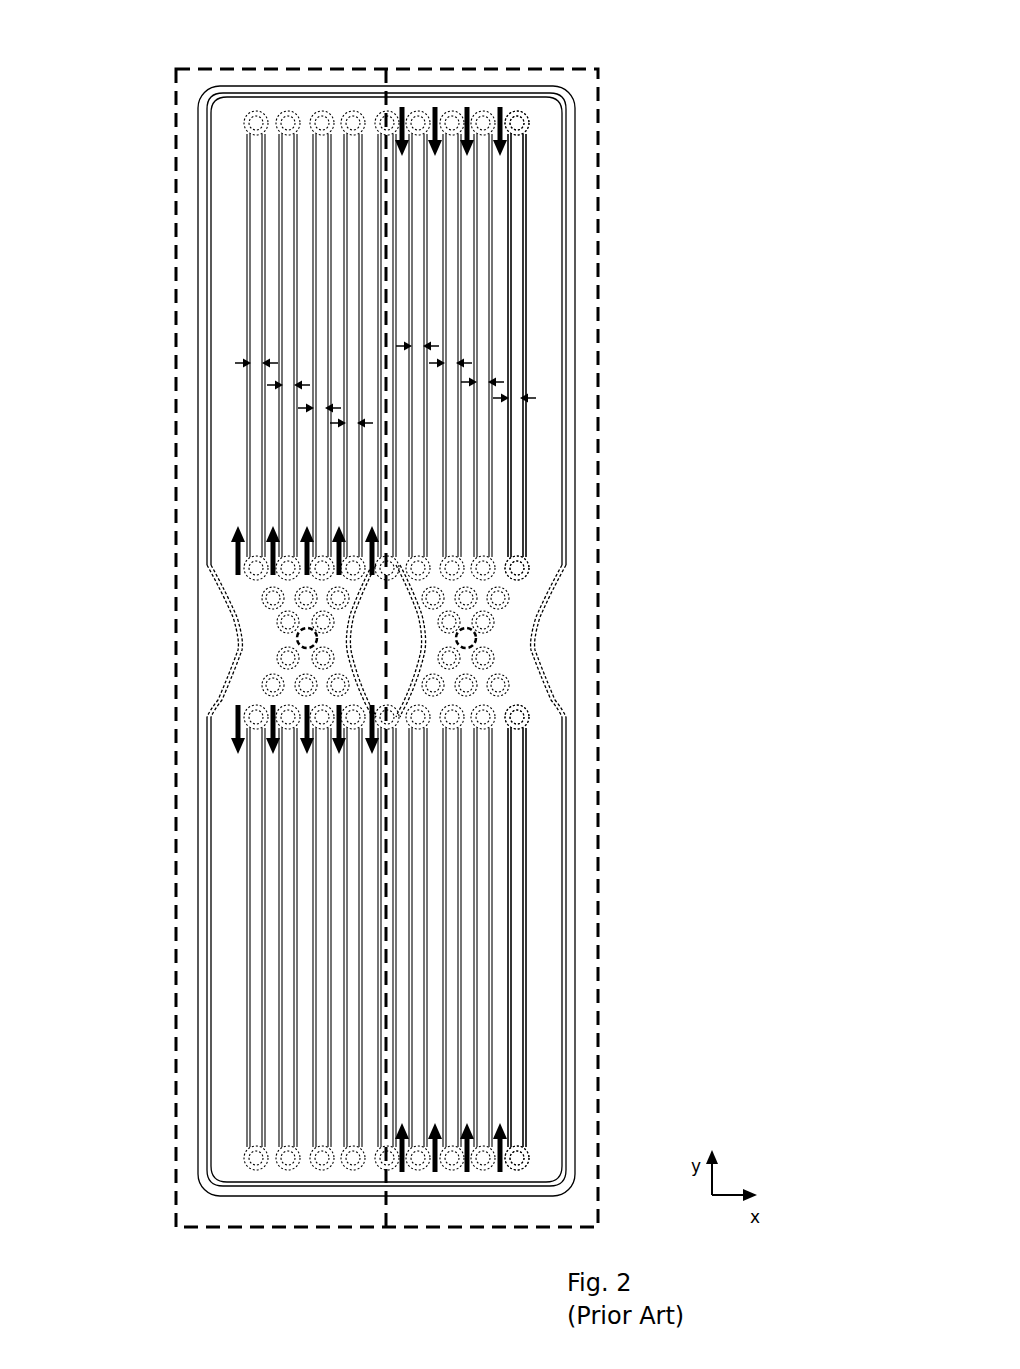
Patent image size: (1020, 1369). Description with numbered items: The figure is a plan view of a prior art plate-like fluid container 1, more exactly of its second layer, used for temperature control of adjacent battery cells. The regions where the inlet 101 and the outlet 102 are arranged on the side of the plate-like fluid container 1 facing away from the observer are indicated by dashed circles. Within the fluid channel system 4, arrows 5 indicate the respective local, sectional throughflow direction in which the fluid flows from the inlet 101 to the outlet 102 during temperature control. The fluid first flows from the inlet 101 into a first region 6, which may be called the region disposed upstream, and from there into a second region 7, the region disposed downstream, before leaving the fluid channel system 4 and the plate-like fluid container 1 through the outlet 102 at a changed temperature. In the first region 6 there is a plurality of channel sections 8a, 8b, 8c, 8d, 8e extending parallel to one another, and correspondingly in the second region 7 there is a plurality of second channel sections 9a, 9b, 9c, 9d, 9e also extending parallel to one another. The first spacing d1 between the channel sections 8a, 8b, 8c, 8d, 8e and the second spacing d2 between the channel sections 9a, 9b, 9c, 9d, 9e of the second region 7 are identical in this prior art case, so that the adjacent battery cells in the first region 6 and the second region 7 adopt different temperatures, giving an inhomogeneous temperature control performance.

The plate-like fluid container 1 is at (572, 527).
The fluid channel system 4 is at (575, 615).
The arrows 5 is at (402, 107).
The first region 6 is at (170, 532).
The second region 7 is at (600, 362).
The first channel section 8a is at (220, 322).
The first channel section 8b is at (265, 300).
The first channel section 8c is at (301, 287).
The first channel section 8d is at (331, 260).
The first channel section 8e is at (363, 224).
The second channel section 9a is at (407, 224).
The second channel section 9b is at (440, 260).
The second channel section 9c is at (470, 287).
The second channel section 9d is at (505, 299).
The second channel section 9e is at (550, 324).
The inlet 101 is at (297, 640).
The outlet 102 is at (476, 640).
The first spacing d1 is at (330, 423).
The second spacing d2 is at (440, 346).